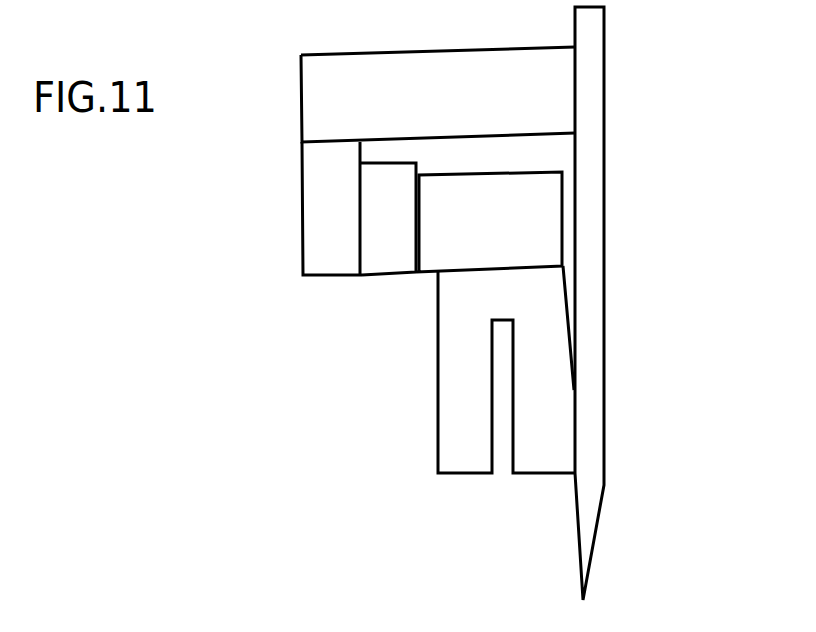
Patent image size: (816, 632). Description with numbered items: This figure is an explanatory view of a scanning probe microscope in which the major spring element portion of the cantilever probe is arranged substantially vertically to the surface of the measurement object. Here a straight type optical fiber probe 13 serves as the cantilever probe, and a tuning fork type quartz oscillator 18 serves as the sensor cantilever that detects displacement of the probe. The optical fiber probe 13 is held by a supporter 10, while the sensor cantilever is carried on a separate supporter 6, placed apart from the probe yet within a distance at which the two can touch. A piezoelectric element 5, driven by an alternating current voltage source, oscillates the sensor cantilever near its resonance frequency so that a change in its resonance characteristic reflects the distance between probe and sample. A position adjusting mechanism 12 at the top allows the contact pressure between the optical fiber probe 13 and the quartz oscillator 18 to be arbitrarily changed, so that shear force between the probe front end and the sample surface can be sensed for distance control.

The position adjusting mechanism 12 is at (325, 105).
The supporter 10 is at (323, 190).
The piezoelectric element 5 is at (390, 263).
The supporter 6 is at (450, 257).
The tuning fork type quartz oscillator 18 is at (460, 368).
The optical fiber probe 13 is at (593, 352).